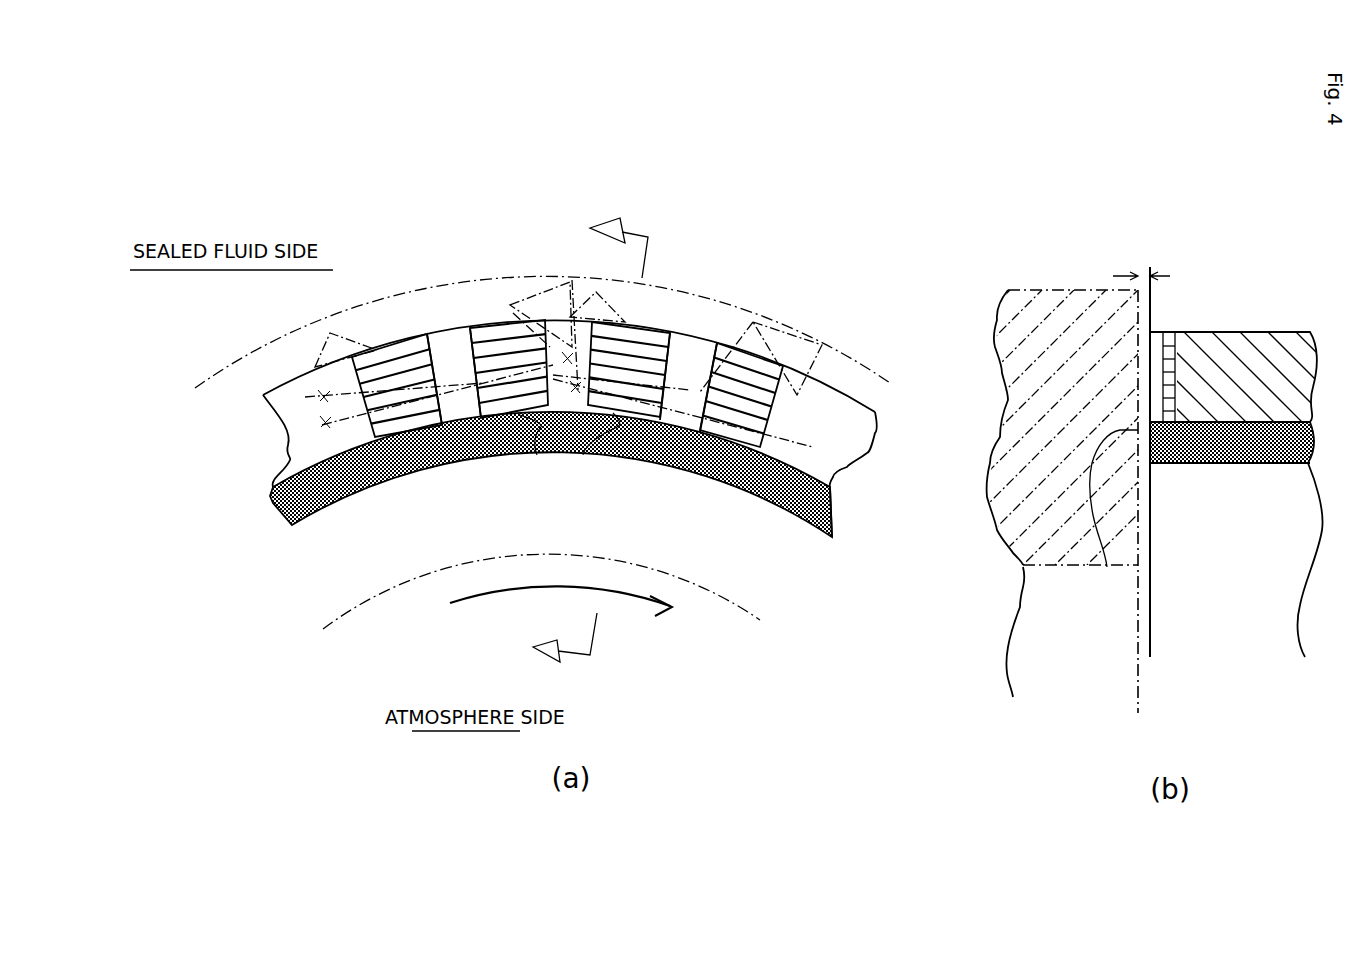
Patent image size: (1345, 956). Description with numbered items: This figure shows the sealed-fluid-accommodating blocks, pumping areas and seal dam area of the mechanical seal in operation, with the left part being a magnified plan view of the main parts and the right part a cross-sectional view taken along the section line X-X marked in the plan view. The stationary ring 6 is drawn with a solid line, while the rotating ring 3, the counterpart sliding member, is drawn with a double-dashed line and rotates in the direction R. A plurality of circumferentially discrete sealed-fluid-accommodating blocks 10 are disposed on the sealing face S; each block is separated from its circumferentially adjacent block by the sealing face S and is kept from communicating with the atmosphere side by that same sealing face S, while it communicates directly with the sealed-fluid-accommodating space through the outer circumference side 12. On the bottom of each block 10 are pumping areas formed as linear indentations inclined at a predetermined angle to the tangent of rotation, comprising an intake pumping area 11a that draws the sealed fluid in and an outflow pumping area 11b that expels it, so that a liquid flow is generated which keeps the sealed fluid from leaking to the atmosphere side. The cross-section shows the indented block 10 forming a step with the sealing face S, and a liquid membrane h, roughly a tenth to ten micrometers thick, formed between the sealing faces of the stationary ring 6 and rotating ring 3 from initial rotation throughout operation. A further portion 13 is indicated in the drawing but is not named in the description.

The rotating ring 3 is at (423, 577).
The stationary ring 6 is at (337, 507).
The sealed-fluid-accommodating block 10 is at (680, 483).
The intake pumping area 11a is at (377, 363).
The outflow pumping area 11b is at (517, 323).
The outer circumference side 12 is at (400, 343).
The sealing face portion 13 is at (740, 465).
The sealing face S is at (430, 466).
The rotation direction R is at (543, 557).
The section line X- X is at (568, 440).
The liquid membrane h is at (1141, 260).